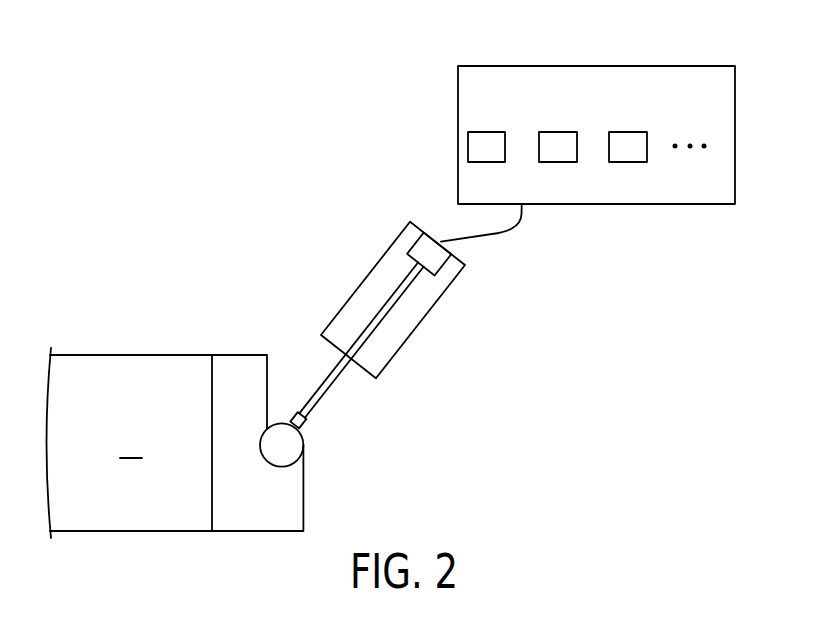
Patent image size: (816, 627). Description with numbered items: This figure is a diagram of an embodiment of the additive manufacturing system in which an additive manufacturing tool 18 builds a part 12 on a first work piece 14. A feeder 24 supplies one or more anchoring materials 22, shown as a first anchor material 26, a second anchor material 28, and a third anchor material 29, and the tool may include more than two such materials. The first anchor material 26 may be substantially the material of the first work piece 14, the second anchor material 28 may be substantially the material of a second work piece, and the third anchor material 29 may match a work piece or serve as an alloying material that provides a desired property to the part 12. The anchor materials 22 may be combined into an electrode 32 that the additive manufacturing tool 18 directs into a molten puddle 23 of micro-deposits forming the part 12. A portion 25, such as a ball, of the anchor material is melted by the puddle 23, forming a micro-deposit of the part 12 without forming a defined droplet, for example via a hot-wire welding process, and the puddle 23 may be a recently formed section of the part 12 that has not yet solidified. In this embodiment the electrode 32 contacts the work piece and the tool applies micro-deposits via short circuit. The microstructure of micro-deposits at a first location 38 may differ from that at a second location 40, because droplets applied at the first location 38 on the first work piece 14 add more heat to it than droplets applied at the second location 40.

The part 12 is at (223, 453).
The first work piece 14 is at (95, 443).
The additive manufacturing tool 18 is at (366, 293).
The anchoring materials 22 is at (595, 119).
The molten puddle 23 is at (283, 455).
The feeder 24 is at (598, 66).
The portion 25 is at (298, 420).
The first anchor material 26 is at (484, 132).
The second anchor material 28 is at (557, 132).
The third anchor material 29 is at (627, 132).
The electrode 32 is at (361, 339).
The first location 38 is at (235, 362).
The second location 40 is at (329, 466).